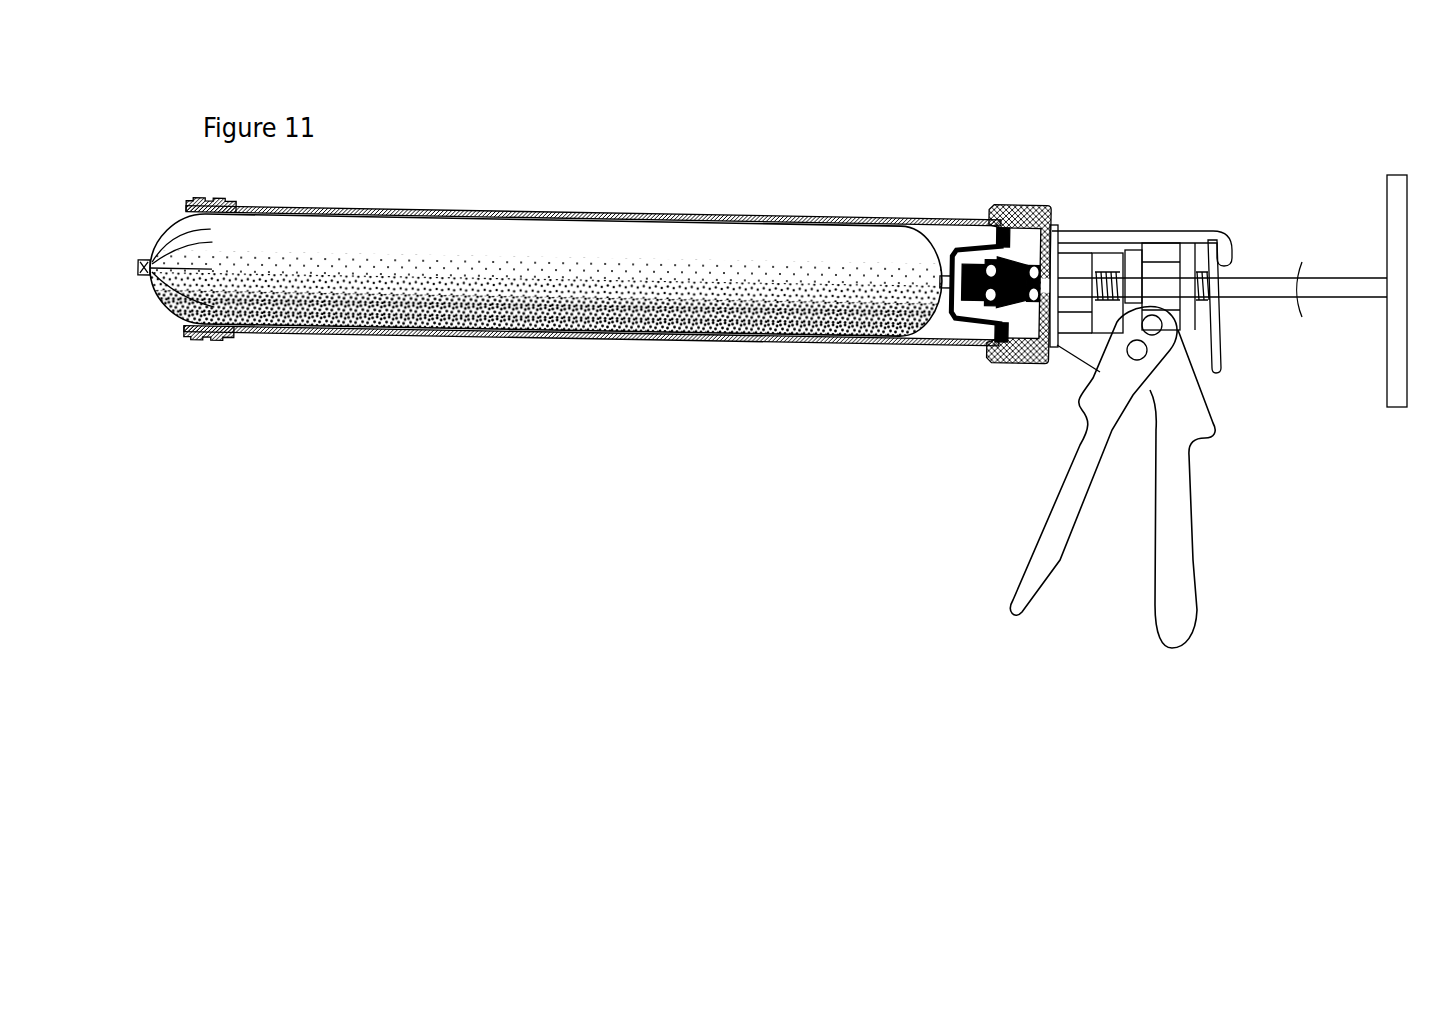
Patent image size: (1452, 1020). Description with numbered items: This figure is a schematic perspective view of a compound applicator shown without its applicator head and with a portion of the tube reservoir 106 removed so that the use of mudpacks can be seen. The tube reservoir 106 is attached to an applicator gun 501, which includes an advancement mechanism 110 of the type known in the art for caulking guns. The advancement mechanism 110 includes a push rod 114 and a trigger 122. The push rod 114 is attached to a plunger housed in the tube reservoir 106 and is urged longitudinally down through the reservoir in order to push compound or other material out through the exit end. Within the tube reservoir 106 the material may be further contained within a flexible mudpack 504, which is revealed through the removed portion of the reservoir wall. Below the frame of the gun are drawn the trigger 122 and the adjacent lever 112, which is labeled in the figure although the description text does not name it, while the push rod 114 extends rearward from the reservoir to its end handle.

The applicator gun 501 is at (1232, 174).
The flexible mudpack 504 is at (610, 248).
The trigger 122 is at (238, 325).
The tube reservoir 106 is at (1003, 207).
The advancement mechanism 110 is at (1153, 283).
The push rod 114 is at (1277, 292).
The trigger 112 is at (1045, 570).